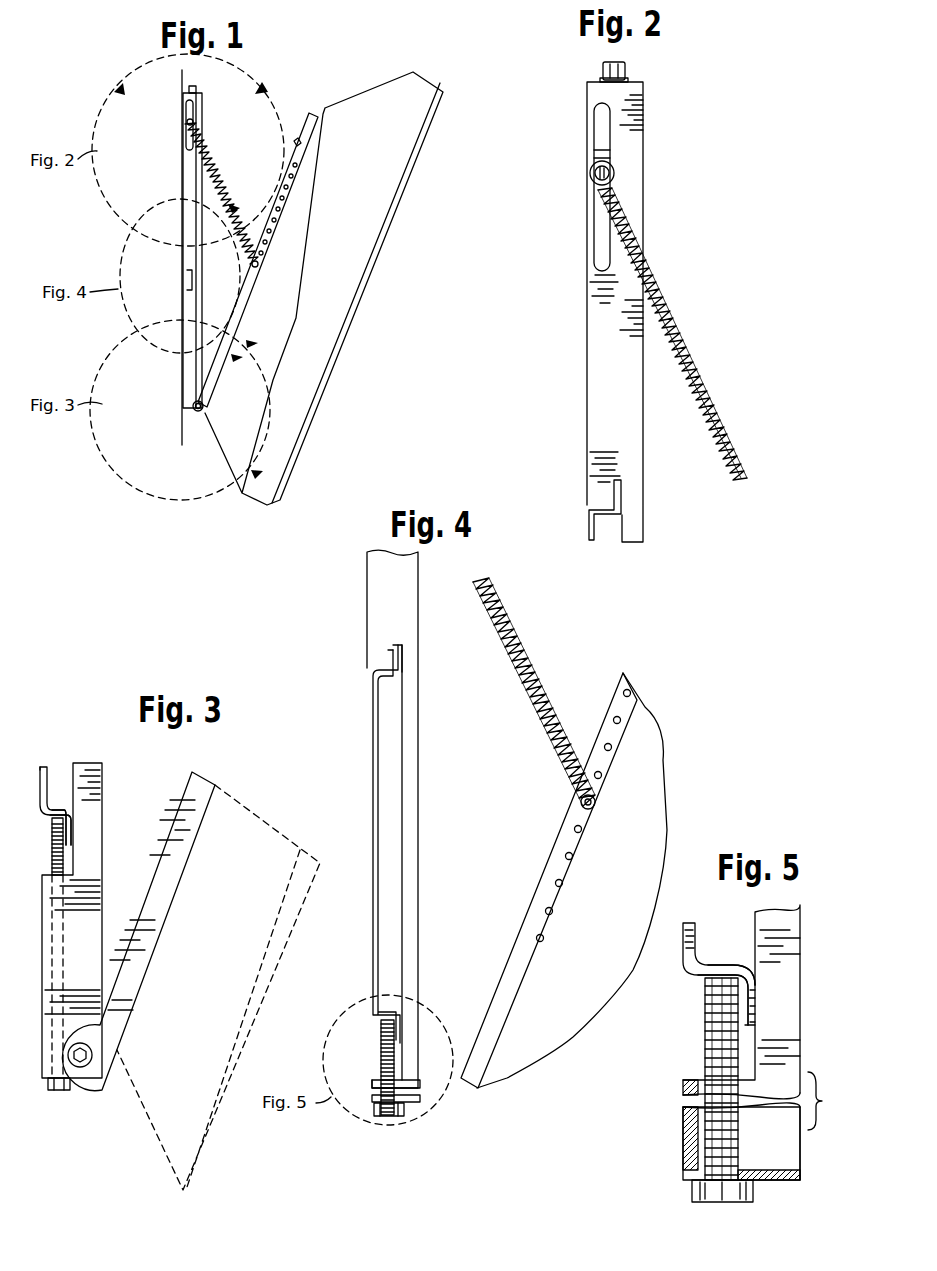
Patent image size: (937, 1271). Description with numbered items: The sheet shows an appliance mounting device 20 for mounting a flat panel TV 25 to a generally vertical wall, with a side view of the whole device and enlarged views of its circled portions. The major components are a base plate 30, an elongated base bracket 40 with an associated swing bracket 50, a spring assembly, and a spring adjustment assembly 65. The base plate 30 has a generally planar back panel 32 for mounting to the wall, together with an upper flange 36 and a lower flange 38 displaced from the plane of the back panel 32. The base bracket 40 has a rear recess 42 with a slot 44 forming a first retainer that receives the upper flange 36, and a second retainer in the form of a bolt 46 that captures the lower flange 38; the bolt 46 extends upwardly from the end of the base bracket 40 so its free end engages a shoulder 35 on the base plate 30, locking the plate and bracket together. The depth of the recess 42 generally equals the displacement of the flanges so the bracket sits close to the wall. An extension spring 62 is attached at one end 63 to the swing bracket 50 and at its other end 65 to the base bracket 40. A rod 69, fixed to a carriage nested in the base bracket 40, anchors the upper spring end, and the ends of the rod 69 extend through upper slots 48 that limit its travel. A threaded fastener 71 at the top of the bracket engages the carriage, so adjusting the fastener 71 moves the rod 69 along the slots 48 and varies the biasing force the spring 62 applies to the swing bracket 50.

In FIG. 1, the appliance mounting device 20 is at (178, 137).
In FIG. 1, the flat panel TV 25 is at (369, 338).
In FIG. 3, the base plate 30 is at (329, 766).
In FIG. 4, the base plate 30 is at (358, 778).
In FIG. 3, the back panel 32 is at (53, 766).
In FIG. 5, the back panel 32 is at (680, 945).
In FIG. 3, the shoulder 35 is at (58, 812).
In FIG. 4, the shoulder 35 is at (388, 1008).
In FIG. 5, the shoulder 35 is at (712, 972).
In FIG. 4, the upper flange 36 is at (388, 656).
In FIG. 5, the lower flange 38 is at (757, 1018).
In FIG. 2, the base bracket 40 is at (587, 420).
In FIG. 3, the base bracket 40 is at (85, 763).
In FIG. 5, the base bracket 40 is at (766, 1180).
In FIG. 2, the rear recess 42 is at (617, 522).
In FIG. 4, the rear recess 42 is at (402, 797).
In FIG. 5, the rear recess 42 is at (757, 935).
In FIG. 4, the slot 44 is at (400, 648).
In FIG. 3, the bolt 46 is at (62, 866).
In FIG. 4, the bolt 46 is at (383, 1046).
In FIG. 5, the bolt 46 is at (690, 1190).
In FIG. 2, the upper slots 48 is at (612, 135).
In FIG. 3, the swing bracket 50 is at (160, 842).
In FIG. 2, the extension spring 62 is at (720, 398).
In FIG. 4, the spring end 63 is at (572, 770).
In FIG. 2, the spring adjustment assembly 65 is at (591, 178).
In FIG. 2, the rod 69 is at (615, 173).
In FIG. 2, the threaded fastener 71 is at (628, 68).